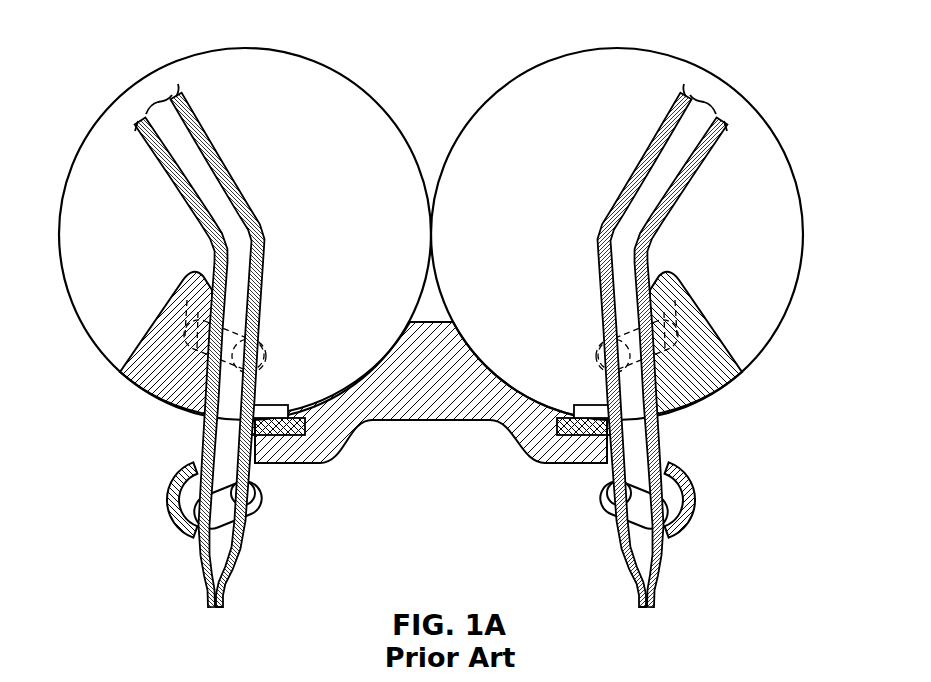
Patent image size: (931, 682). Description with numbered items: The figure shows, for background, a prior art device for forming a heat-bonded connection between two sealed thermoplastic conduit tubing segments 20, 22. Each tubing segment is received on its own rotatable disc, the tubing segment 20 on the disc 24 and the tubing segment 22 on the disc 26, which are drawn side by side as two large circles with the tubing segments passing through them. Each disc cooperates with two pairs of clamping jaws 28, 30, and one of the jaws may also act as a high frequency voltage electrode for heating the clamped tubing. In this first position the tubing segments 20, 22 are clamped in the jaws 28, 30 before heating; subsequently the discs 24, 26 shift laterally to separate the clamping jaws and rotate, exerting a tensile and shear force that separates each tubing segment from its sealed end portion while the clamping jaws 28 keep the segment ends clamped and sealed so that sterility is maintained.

The tubing segment 20 is at (663, 125).
The tubing segment 22 is at (202, 124).
The rotatable disc 24 is at (533, 87).
The rotatable disc 26 is at (328, 87).
The clamping jaws 28 is at (147, 390).
The clamping jaws 30 is at (168, 503).